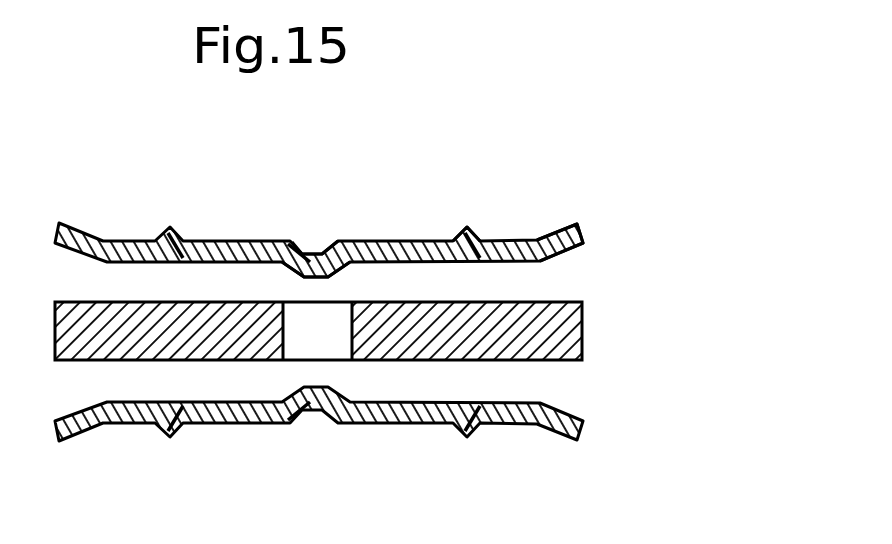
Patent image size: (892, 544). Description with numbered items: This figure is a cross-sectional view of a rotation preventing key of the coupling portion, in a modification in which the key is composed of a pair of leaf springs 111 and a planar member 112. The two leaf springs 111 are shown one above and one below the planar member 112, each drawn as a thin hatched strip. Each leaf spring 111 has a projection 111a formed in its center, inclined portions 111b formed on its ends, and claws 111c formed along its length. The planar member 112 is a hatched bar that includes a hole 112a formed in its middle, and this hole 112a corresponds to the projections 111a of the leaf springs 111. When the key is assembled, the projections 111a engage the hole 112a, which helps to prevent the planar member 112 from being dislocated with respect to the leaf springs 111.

The leaf spring 111 is at (231, 240).
The projection 111a is at (313, 235).
The inclined portion 111b is at (583, 232).
The claw 111c is at (478, 238).
The planar member 112 is at (583, 342).
The hole 112a is at (325, 347).